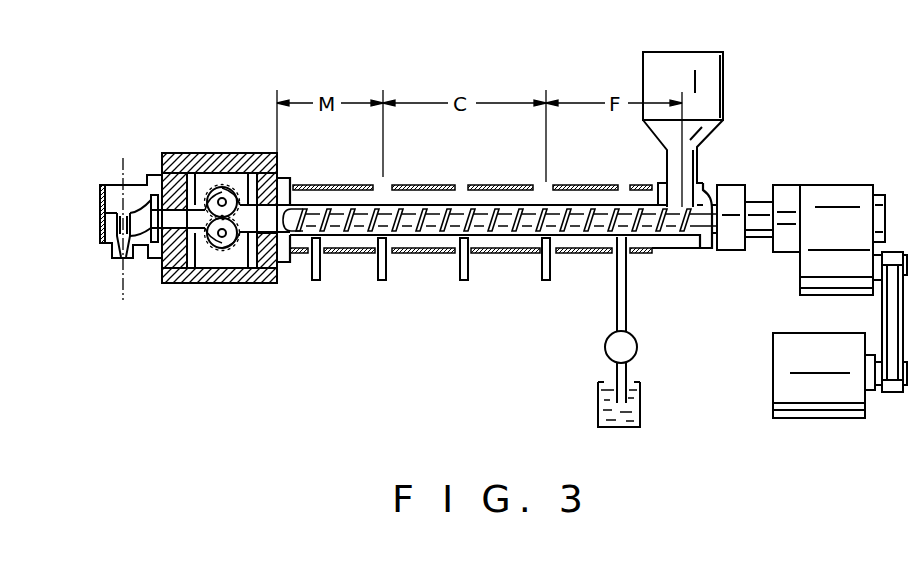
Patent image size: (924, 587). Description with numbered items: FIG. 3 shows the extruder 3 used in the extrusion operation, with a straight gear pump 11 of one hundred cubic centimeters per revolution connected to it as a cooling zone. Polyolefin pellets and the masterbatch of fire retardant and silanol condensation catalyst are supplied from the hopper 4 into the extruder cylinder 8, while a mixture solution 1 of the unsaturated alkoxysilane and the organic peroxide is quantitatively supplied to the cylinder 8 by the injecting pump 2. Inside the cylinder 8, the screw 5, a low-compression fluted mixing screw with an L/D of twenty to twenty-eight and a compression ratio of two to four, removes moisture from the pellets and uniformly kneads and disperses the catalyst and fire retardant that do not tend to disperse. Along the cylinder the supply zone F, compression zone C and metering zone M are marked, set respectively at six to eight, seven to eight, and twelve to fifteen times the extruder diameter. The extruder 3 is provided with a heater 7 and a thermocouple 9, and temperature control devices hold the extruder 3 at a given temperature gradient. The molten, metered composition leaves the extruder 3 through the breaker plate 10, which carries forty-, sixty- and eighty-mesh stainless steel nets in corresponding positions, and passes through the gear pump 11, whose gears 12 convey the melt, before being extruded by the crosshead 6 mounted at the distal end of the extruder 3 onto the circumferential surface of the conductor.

The mixture solution 1 is at (598, 401).
The injecting pump 2 is at (605, 347).
The extruder 3 is at (740, 185).
The hopper 4 is at (723, 92).
The screw 5 is at (414, 232).
The crosshead 6 is at (122, 258).
The heater 7 is at (102, 228).
The extruder cylinder 8 is at (462, 200).
The thermocouple 9 is at (312, 270).
The breaker plate 10 is at (157, 250).
The straight gear pump 11 is at (206, 182).
The gears 12 is at (229, 186).